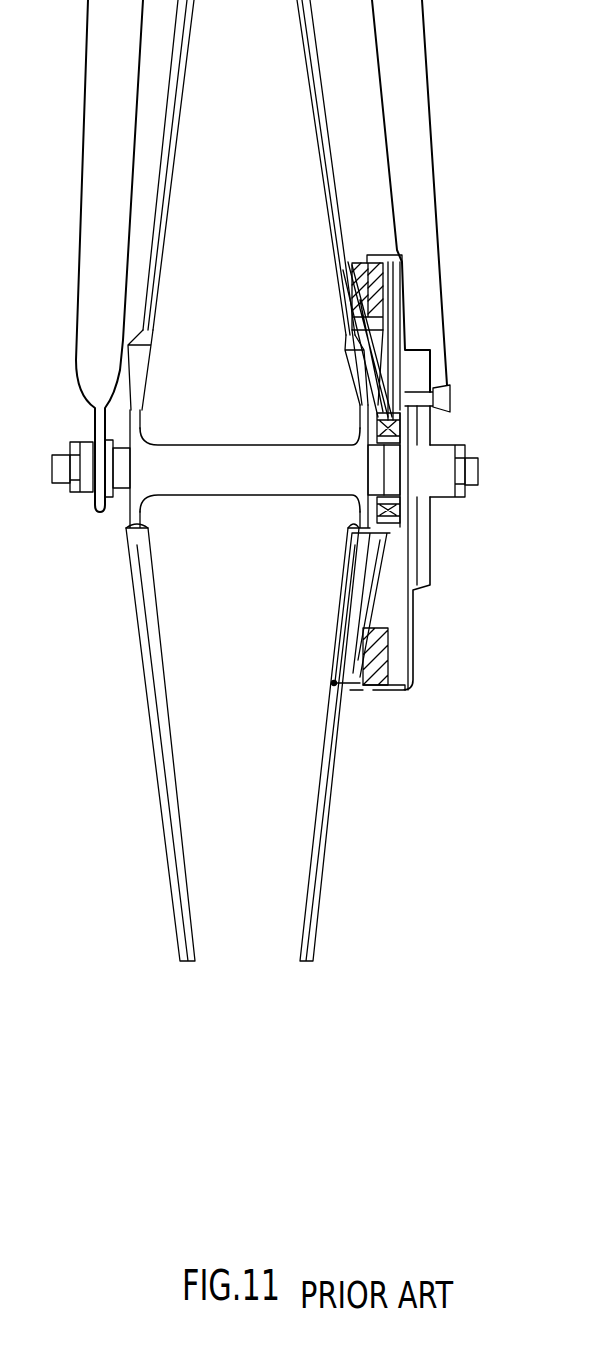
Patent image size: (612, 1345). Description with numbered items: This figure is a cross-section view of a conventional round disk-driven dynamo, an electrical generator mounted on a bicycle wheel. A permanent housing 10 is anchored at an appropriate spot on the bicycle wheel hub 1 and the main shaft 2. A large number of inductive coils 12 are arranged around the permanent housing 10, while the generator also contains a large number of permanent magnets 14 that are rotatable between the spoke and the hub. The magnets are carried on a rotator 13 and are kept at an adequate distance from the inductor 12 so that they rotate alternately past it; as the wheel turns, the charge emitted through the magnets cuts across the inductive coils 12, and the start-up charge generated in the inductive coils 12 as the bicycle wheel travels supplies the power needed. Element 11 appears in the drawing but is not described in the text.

The bicycle wheel hub 1 is at (238, 446).
The main shaft 2 is at (398, 468).
The permanent housing 10 is at (425, 634).
The bracket lower portion 11 is at (410, 668).
The inductive coil 12 is at (385, 580).
The rotator 13 is at (355, 690).
The permanent magnet 14 is at (395, 290).